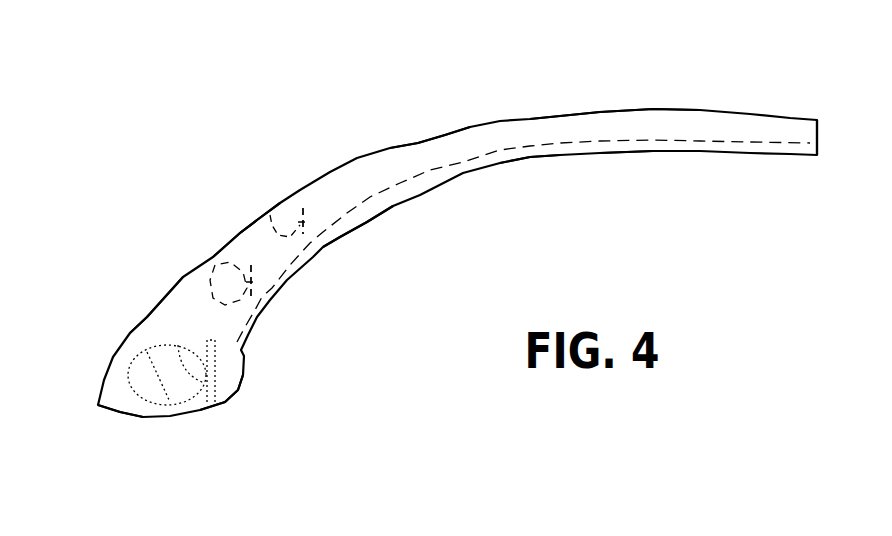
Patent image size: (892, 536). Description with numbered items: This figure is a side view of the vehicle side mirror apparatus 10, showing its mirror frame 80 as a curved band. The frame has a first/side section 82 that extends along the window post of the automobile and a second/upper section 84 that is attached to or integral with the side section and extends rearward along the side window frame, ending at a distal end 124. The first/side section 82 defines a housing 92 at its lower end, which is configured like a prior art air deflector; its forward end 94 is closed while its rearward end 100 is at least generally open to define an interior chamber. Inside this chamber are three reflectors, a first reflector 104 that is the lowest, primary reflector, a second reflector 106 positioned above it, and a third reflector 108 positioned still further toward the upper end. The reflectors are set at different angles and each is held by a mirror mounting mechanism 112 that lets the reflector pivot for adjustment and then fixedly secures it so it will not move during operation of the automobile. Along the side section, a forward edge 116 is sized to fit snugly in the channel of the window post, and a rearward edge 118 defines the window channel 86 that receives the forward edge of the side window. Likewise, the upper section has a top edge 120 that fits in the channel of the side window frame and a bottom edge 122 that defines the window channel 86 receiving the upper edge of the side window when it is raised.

The side mirror apparatus 10 is at (358, 132).
The mirror frame 80 is at (418, 143).
The first/side section 82 is at (265, 253).
The second/upper section 84 is at (551, 130).
The window channel 86 is at (527, 160).
The housing 92 is at (167, 334).
The forward end 94 is at (99, 416).
The rearward end 100 is at (242, 402).
The first reflector 104 is at (210, 358).
The second reflector 106 is at (255, 278).
The third reflector 108 is at (305, 210).
The mirror mounting mechanism 112 is at (283, 217).
The forward edge 116 is at (256, 221).
The rearward edge 118 is at (347, 228).
The top edge 120 is at (653, 108).
The bottom edge 122 is at (667, 153).
The distal end 124 is at (813, 166).